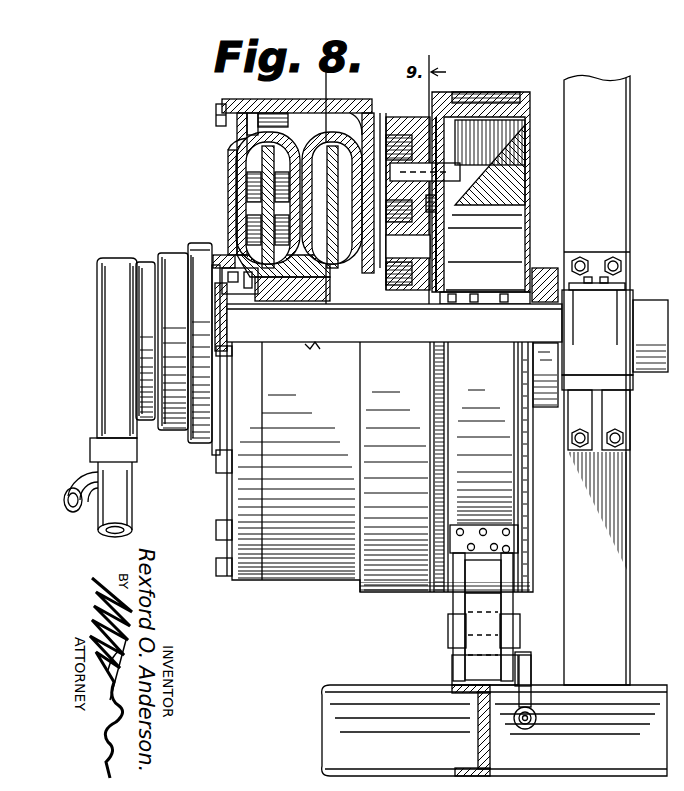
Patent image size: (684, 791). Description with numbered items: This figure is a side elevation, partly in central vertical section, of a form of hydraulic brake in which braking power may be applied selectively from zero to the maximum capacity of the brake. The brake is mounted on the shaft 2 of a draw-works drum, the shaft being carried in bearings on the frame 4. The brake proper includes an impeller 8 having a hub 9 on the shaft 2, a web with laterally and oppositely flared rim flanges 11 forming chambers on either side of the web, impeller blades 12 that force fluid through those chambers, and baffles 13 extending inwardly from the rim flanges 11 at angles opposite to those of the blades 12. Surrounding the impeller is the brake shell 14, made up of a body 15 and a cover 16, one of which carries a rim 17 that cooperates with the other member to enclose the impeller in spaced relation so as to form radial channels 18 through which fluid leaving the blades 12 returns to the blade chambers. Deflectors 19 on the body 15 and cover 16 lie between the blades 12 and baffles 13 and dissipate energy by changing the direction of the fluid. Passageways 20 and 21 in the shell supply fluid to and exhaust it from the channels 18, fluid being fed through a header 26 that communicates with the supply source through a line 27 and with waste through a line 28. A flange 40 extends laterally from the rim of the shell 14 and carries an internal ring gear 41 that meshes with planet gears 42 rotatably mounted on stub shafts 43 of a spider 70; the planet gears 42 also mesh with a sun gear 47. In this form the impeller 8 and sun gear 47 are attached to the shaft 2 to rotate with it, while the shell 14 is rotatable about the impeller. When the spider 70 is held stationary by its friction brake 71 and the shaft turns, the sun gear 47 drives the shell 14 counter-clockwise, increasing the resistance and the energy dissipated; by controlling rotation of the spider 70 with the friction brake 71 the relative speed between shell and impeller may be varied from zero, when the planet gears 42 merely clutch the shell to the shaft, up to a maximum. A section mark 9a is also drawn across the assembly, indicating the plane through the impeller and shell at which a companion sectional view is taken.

The shaft 2 is at (642, 302).
The frame 4 is at (636, 686).
The impeller 8 is at (246, 122).
The hub 9 is at (216, 256).
The section line 9a is at (344, 84).
The rim flanges 11 is at (250, 134).
The impeller blades 12 is at (290, 236).
The baffles 13 is at (268, 158).
The brake shell 14 is at (240, 582).
The body 15 is at (368, 112).
The cover 16 is at (218, 108).
The rim 17 is at (272, 118).
The radial channels 18 is at (252, 184).
The deflectors 19 is at (282, 200).
The passageways 20 is at (352, 112).
The passageways 21 is at (230, 170).
The header 26 is at (163, 258).
The line 27 is at (134, 506).
The line 28 is at (92, 476).
The flange 40 is at (438, 102).
The internal ring gear 41 is at (394, 100).
The planet gears 42 is at (436, 213).
The stub shafts 43 is at (458, 170).
The sun gear 47 is at (410, 268).
The spider 70 is at (456, 278).
The friction brake 71 is at (482, 94).